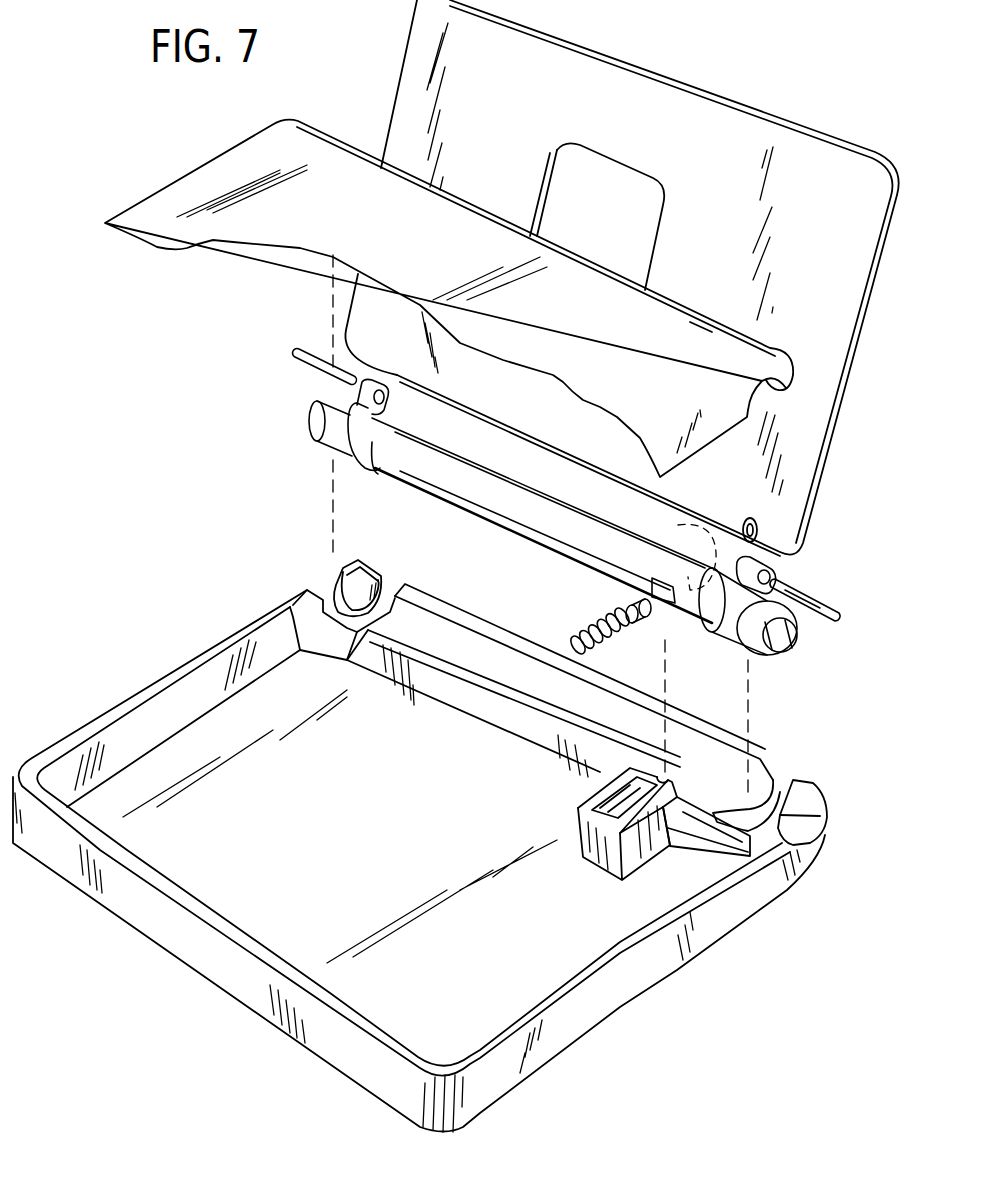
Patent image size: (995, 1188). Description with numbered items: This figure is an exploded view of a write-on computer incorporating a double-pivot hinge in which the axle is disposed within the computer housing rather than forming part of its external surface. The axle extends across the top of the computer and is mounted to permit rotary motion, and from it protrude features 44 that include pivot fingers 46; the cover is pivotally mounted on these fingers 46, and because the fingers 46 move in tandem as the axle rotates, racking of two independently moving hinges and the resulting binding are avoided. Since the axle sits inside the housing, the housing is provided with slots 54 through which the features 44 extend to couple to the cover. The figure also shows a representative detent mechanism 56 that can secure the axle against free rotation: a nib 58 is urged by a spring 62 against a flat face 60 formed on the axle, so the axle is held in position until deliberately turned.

The features 44 is at (372, 382).
The pivot fingers 46 is at (313, 350).
The slots 54 is at (394, 566).
The detent mechanism 56 is at (575, 615).
The nib 58 is at (650, 603).
The flat face 60 is at (657, 593).
The spring 62 is at (600, 650).